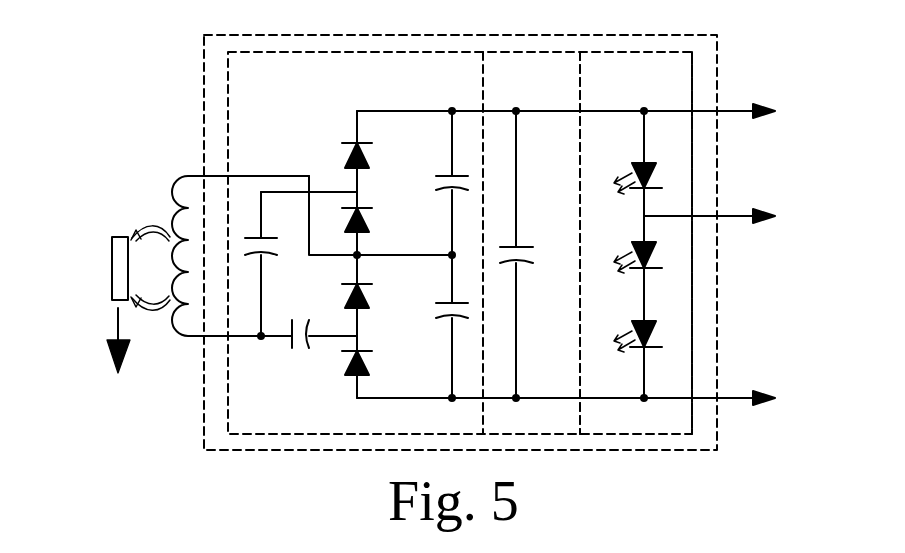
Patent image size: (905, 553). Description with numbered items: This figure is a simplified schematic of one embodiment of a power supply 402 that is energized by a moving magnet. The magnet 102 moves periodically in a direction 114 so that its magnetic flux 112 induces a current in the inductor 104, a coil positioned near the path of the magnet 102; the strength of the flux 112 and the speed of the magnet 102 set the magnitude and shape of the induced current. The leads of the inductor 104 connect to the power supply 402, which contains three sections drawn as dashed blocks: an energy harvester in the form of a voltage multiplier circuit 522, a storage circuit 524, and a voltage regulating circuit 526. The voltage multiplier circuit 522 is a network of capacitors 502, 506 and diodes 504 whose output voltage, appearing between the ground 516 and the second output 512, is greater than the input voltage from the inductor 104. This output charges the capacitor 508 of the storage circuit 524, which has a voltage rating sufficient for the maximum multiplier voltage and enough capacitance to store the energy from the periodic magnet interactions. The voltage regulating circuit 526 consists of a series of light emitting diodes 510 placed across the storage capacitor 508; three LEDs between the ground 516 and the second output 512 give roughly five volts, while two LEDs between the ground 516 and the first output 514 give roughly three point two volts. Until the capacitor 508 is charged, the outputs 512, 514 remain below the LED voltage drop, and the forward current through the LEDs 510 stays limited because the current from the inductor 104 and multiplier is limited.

The magnet 102 is at (112, 265).
The inductor 104 is at (172, 190).
The magnetic flux 112 is at (147, 228).
The direction of magnet movement 114 is at (116, 330).
The power supply 402 is at (204, 98).
The capacitors 502 is at (268, 257).
The diodes 504 is at (345, 158).
The capacitors 506 is at (444, 190).
The storage capacitor 508 is at (522, 265).
The light emitting diodes 510 is at (630, 193).
The second output 512 is at (735, 114).
The first output 514 is at (735, 219).
The ground 516 is at (735, 401).
The voltage multiplier circuit 522 is at (358, 85).
The storage circuit 524 is at (550, 85).
The voltage regulating circuit 526 is at (654, 85).